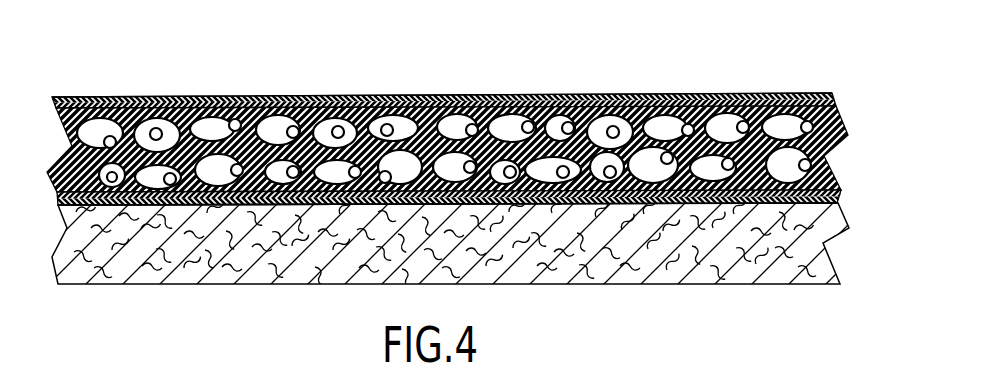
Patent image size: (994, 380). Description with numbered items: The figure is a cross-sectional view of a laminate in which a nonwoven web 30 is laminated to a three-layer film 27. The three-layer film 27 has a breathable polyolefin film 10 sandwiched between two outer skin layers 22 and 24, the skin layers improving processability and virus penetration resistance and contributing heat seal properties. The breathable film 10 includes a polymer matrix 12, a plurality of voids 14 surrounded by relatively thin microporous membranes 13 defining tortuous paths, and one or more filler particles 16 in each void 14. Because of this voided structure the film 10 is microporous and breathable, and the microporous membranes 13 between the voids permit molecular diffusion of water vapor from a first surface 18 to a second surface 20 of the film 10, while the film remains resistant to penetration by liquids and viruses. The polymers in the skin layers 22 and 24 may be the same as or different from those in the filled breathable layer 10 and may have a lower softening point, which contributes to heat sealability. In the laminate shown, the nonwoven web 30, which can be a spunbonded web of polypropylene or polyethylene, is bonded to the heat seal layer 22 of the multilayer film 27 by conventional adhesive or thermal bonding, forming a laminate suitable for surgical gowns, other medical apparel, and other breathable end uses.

The breathable polyolefin film 10 is at (833, 184).
The polymer matrix 12 is at (704, 96).
The microporous membranes 13 is at (438, 143).
The voids 14 is at (622, 118).
The filler particles 16 is at (613, 125).
The first surface 18 is at (100, 96).
The second surface 20 is at (88, 206).
The outer skin layer 22 is at (836, 195).
The outer skin layer 24 is at (836, 99).
The three-layer film 27 is at (811, 95).
The nonwoven web 30 is at (632, 247).